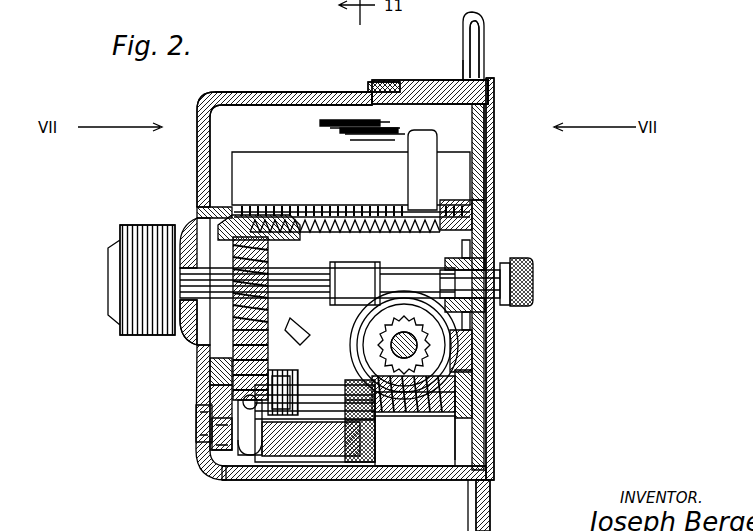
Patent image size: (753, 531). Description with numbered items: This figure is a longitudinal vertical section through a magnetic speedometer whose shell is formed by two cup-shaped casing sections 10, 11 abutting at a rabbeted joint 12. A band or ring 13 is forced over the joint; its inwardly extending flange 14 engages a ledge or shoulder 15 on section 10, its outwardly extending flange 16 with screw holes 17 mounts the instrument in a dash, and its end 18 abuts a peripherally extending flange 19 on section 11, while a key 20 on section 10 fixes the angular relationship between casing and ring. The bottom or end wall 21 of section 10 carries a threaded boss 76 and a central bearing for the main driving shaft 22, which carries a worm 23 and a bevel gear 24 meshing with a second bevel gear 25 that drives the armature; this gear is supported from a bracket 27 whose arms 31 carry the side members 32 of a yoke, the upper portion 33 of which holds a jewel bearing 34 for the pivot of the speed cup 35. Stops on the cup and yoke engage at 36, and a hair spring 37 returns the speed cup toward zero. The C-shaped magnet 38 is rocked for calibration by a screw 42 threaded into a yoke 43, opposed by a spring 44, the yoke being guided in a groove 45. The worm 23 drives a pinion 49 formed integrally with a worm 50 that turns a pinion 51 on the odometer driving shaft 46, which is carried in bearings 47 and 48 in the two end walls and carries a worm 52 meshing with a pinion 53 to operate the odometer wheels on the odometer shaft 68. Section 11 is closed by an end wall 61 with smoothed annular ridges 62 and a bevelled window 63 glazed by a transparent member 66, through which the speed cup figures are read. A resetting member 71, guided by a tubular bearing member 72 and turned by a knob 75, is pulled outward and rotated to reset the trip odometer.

The casing section 10 is at (263, 92).
The casing section 11 is at (416, 80).
The joint 12 is at (394, 80).
The band or ring 13 is at (438, 80).
The inwardly extending flange 14 is at (370, 83).
The ledge or shoulder 15 is at (378, 82).
The outwardly extending flange 16 is at (470, 24).
The screw holes 17 is at (476, 46).
The end of securing member 18 is at (480, 80).
The peripherally extending flange 19 is at (476, 92).
The key 20 is at (338, 480).
The bottom or end wall 21 is at (205, 148).
The main driving shaft 22 is at (196, 335).
The worm 23 is at (228, 330).
The bevel gear 24 is at (283, 318).
The second bevel gear 25 is at (210, 210).
The supporting member or bracket 27 is at (364, 395).
The arms 31 is at (335, 238).
The side members of yoke 32 is at (478, 118).
The upper portion of yoke 33 is at (352, 130).
The jewel bearing 34 is at (245, 92).
The speed cup 35 is at (252, 160).
The stops 36 is at (452, 80).
The hair spring 37 is at (342, 126).
The C-shaped magnet 38 is at (248, 425).
The screw 42 is at (205, 458).
The yoke 43 is at (280, 455).
The spring 44 is at (198, 435).
The groove 45 is at (310, 464).
The odometer driving shaft 46 is at (240, 445).
The bearing 47 is at (222, 385).
The bearing 48 is at (452, 396).
The pinion 49 is at (232, 352).
The worm 50 is at (215, 372).
The pinion 51 is at (222, 432).
The worm 52 is at (414, 395).
The pinion 53 is at (432, 358).
The end wall 61 is at (480, 142).
The annular ridges 62 is at (490, 97).
The window 63 is at (476, 178).
The transparent members 66 is at (470, 210).
The odometer shaft 68 is at (412, 345).
The resetting member 71 is at (465, 276).
The tubular guide or bearing member 72 is at (456, 262).
The knob 75 is at (521, 260).
The threaded boss 76 is at (155, 240).